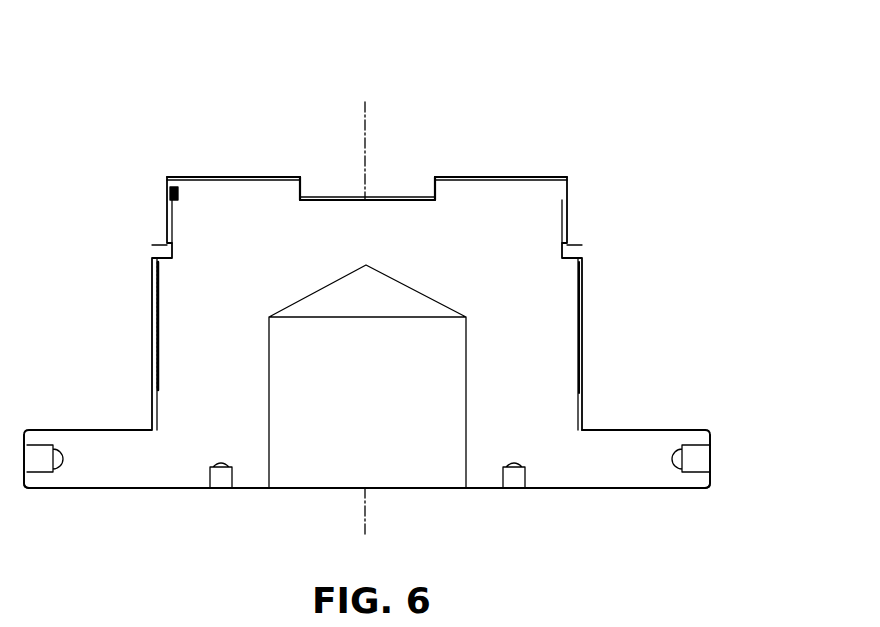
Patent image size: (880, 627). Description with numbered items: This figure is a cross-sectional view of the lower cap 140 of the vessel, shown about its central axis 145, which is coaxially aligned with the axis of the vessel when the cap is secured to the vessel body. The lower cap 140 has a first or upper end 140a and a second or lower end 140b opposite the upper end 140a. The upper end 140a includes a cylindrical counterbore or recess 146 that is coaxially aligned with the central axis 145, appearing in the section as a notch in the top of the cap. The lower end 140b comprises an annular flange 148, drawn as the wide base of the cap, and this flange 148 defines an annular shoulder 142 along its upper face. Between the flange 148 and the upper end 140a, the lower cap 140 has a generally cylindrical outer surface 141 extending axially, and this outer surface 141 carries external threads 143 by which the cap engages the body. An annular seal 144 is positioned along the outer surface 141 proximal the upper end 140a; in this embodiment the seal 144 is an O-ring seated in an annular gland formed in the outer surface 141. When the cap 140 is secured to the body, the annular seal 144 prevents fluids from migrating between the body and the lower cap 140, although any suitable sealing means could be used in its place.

The lower cap 140 is at (391, 301).
The upper end 140a is at (550, 176).
The lower end 140b is at (685, 490).
The outer surface 141 is at (581, 362).
The annular shoulder 142 is at (620, 430).
The external threads 143 is at (153, 314).
The annular seal 144 is at (168, 195).
The central axis 145 is at (365, 104).
The recess 146 is at (328, 178).
The annular flange 148 is at (612, 491).